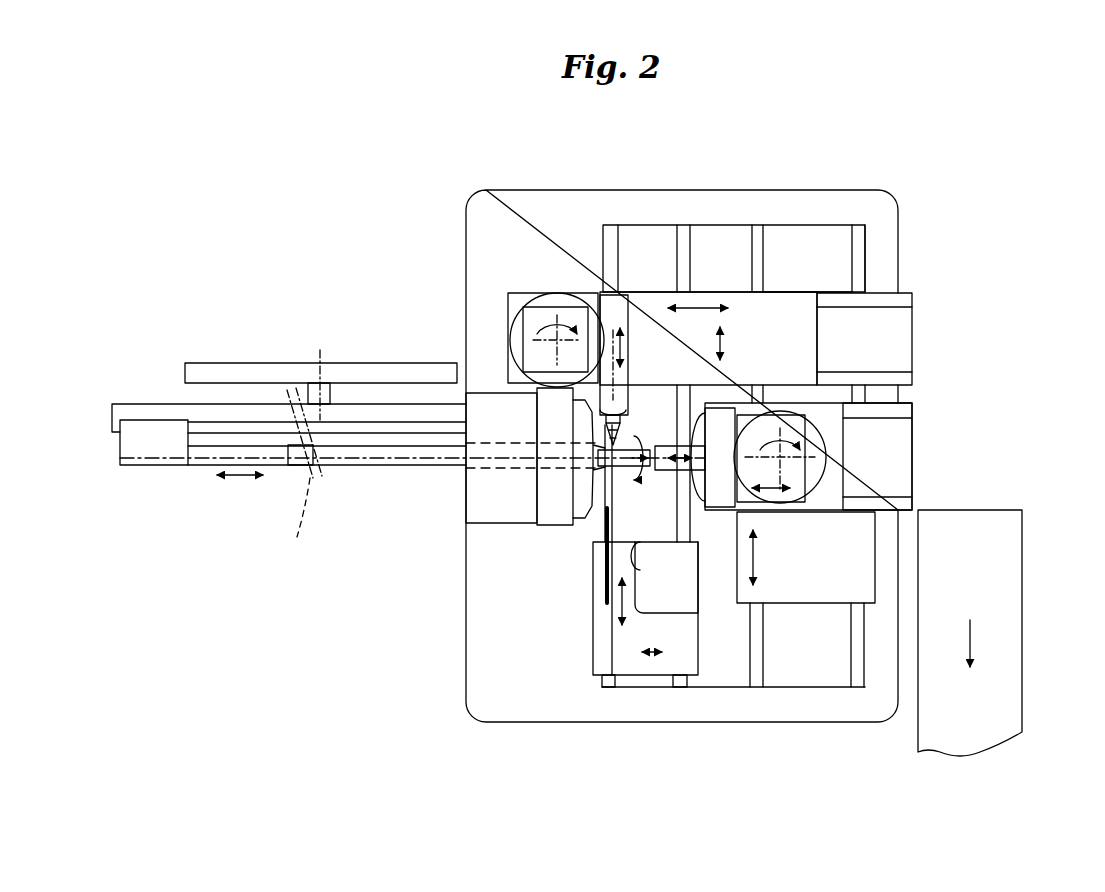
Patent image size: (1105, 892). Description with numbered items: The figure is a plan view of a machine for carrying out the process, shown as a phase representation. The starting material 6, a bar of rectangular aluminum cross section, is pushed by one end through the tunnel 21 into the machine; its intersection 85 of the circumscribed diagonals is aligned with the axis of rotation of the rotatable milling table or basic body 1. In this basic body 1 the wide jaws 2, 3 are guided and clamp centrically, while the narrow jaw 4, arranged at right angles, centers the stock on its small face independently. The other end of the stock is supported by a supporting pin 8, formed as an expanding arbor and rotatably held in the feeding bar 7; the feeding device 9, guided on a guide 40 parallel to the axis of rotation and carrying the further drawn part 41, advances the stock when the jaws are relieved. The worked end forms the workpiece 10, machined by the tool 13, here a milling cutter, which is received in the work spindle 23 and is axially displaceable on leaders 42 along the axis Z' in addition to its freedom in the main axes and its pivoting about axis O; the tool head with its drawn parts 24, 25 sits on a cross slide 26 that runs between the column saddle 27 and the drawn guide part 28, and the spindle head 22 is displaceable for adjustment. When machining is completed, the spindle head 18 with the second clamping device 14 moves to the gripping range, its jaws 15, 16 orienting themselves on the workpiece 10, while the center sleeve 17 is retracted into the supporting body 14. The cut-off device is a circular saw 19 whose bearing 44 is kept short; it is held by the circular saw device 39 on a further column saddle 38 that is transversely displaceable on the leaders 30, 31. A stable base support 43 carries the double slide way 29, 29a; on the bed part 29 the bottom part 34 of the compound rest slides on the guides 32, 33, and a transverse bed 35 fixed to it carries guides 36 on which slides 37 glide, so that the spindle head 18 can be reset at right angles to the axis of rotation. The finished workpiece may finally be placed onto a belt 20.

The basic body 1 is at (570, 520).
The wide jaw 2 is at (580, 428).
The wide jaw 3 is at (600, 490).
The narrow jaw 4 is at (592, 540).
The starting material 6 is at (378, 458).
The feeding bar 7 is at (210, 465).
The supporting pin 8 is at (304, 472).
The feeding device 9 is at (147, 465).
The workpiece 10 is at (638, 482).
The tool 13 is at (640, 440).
The second clamping device 14 is at (722, 493).
The jaw 15 is at (675, 470).
The jaw 16 is at (693, 438).
The center sleeve 17 is at (680, 455).
The spindle head 18 is at (787, 475).
The circular saw 19 is at (607, 527).
The belt 20 is at (1008, 577).
The tunnel 21 is at (497, 478).
The spindle head 22 is at (503, 523).
The work spindle 23 is at (613, 302).
The tool turret 24 is at (588, 310).
The turret housing 25 is at (528, 315).
The cross slide 26 is at (697, 305).
The column saddle 27 is at (896, 338).
The slide guide 28 is at (903, 297).
The bed part 29 is at (797, 233).
The double slide way 29a is at (662, 683).
The leader 30 is at (612, 230).
The leader 31 is at (680, 228).
The guide 32 is at (757, 228).
The guide 33 is at (858, 228).
The bottom part 34 is at (843, 560).
The transverse bed 35 is at (890, 462).
The guide 36 is at (905, 408).
The slide 37 is at (832, 478).
The column saddle 38 is at (602, 637).
The circular saw device 39 is at (636, 662).
The guide 40 is at (135, 404).
The bar feeder support 41 is at (203, 363).
The leader 42 is at (600, 303).
The base support 43 is at (493, 685).
The bearing 44 is at (600, 600).
The intersection of the diagonals 85 is at (430, 458).